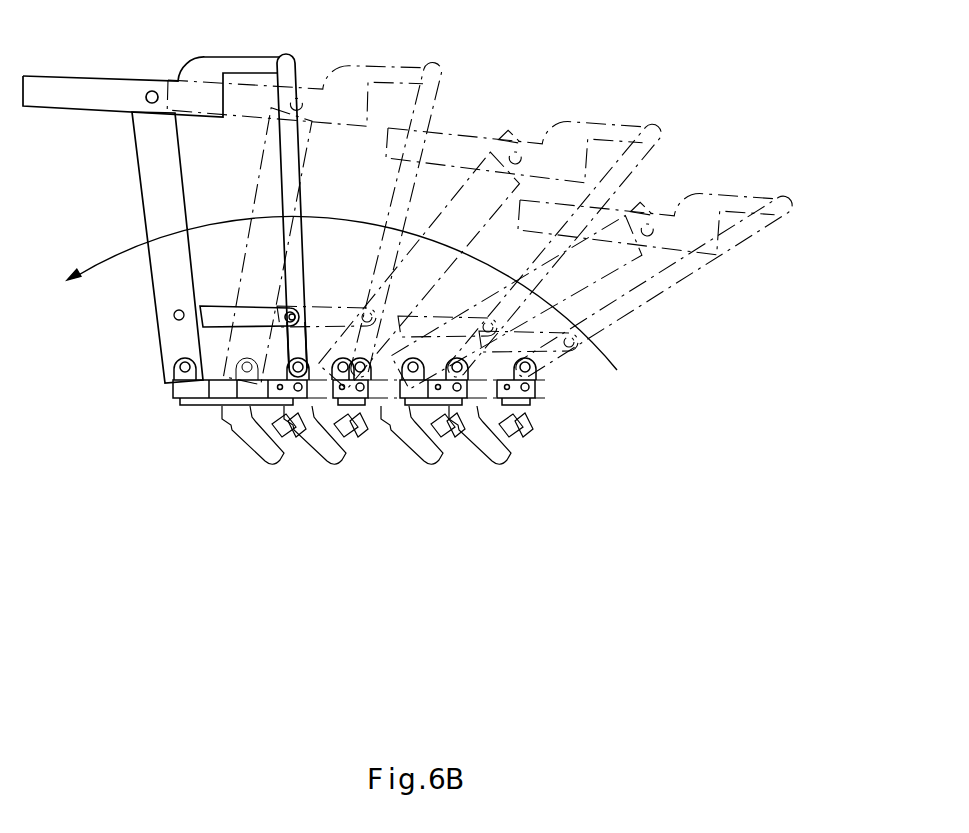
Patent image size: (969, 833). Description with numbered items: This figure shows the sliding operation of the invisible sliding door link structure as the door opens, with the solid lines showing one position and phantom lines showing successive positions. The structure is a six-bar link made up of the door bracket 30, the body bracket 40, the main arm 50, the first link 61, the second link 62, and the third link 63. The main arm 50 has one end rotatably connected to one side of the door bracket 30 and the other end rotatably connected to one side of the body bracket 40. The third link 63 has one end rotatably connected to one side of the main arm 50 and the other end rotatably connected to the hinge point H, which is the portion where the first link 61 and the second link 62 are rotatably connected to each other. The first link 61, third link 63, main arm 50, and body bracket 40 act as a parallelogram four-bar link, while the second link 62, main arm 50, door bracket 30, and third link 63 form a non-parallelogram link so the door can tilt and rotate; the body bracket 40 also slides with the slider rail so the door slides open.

The door bracket 30 is at (73, 86).
The body bracket 40 is at (205, 383).
The main arm 50 is at (155, 192).
The first link 61 is at (297, 338).
The second link 62 is at (288, 167).
The third link 63 is at (250, 308).
The hinge point H is at (300, 318).